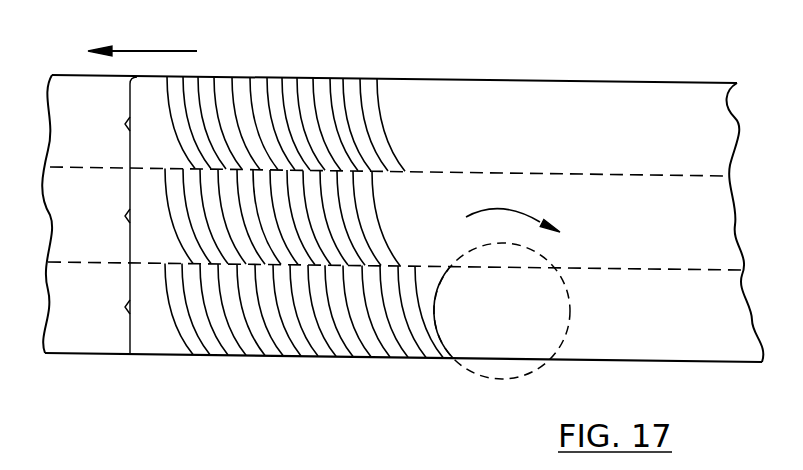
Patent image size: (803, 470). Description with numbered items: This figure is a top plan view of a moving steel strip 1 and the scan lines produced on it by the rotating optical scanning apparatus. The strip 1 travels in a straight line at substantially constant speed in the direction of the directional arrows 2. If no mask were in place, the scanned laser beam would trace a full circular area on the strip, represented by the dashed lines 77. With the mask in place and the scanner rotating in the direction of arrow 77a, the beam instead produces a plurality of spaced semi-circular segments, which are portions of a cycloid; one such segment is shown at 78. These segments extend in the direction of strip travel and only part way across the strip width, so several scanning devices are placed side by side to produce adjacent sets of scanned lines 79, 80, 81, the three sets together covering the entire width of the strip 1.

The steel strip 1 is at (402, 265).
The directional arrows 2 is at (163, 50).
The dashed lines 77 is at (569, 296).
The arrow 77a is at (523, 212).
The semi-circular segment 78 is at (402, 347).
The set of scanned lines 79 is at (352, 337).
The set of scanned lines 80 is at (394, 220).
The set of scanned lines 81 is at (389, 126).